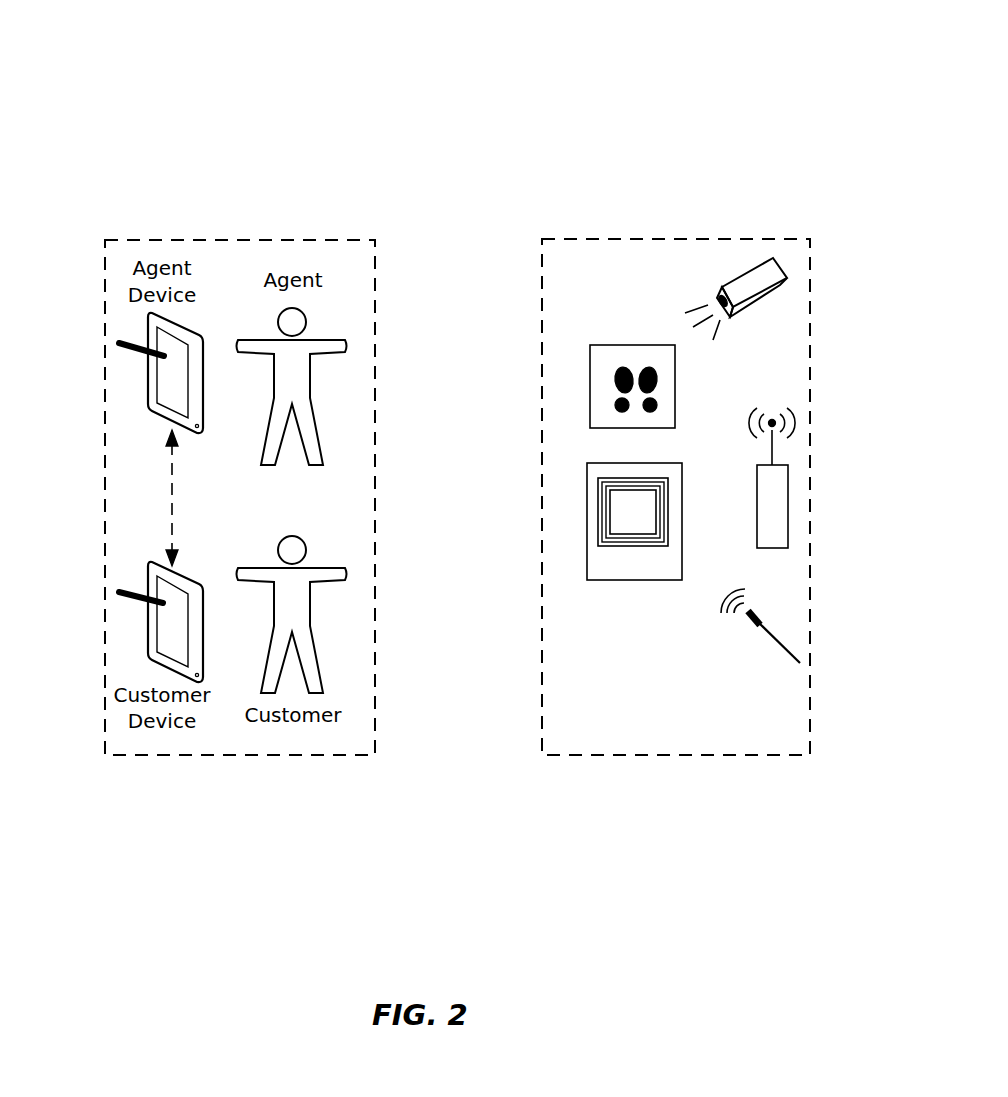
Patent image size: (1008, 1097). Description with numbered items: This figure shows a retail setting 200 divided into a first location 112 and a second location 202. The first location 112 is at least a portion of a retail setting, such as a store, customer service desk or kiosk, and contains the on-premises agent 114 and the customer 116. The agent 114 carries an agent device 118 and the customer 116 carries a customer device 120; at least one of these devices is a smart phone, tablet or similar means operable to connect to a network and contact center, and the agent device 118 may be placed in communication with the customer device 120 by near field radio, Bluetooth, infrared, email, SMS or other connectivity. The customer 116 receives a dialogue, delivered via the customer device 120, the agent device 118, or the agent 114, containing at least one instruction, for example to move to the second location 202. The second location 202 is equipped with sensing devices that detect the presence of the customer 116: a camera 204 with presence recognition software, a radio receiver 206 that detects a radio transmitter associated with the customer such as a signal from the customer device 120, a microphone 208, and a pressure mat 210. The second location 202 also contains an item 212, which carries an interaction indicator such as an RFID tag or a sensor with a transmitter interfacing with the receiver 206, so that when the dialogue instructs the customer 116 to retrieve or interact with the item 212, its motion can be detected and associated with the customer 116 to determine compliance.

The system 200 is at (752, 80).
The first location 112 is at (335, 240).
The on-premises agent 114 is at (333, 345).
The customer 116 is at (335, 573).
The agent device 118 is at (160, 341).
The customer device 120 is at (160, 620).
The second location 202 is at (748, 238).
The camera 204 is at (780, 287).
The radio receiver 206 is at (789, 508).
The microphone 208 is at (780, 641).
The pressure mat 210 is at (590, 385).
The item 212 is at (587, 488).